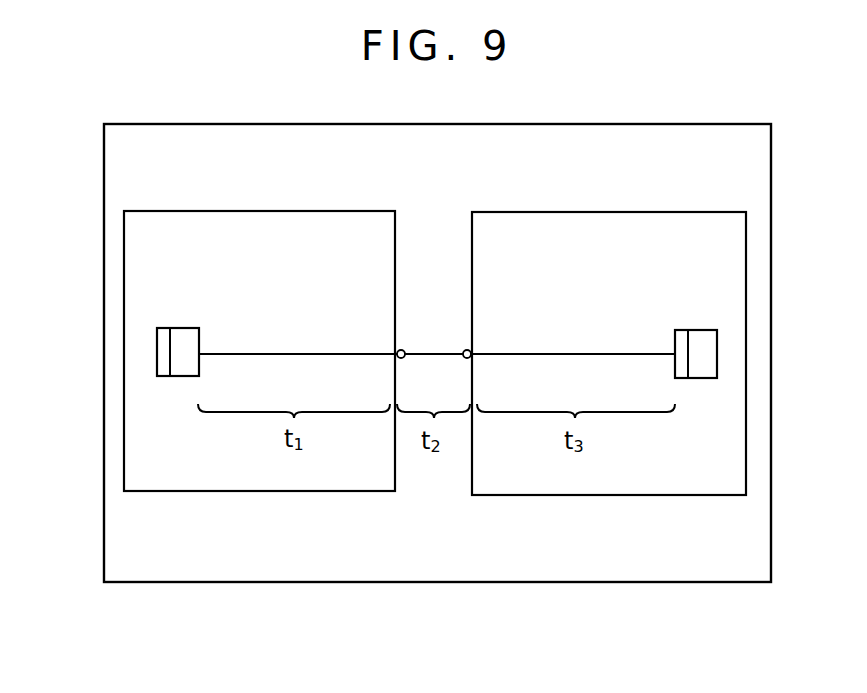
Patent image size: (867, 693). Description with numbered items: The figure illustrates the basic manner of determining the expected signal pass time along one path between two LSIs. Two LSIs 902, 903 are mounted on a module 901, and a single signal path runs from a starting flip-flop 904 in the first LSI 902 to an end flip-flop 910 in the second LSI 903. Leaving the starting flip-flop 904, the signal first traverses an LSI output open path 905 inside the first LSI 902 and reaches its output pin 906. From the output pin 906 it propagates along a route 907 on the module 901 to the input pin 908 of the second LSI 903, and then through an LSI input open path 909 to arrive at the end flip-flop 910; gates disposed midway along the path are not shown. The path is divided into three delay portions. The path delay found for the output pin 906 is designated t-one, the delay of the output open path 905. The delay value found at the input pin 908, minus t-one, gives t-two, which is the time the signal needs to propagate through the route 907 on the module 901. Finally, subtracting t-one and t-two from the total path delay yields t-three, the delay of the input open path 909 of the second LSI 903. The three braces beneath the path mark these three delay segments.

The module 901 is at (670, 583).
The LSI 902 is at (341, 210).
The LSI 903 is at (698, 211).
The starting flip-flop 904 is at (183, 328).
The LSI output open path 905 is at (295, 354).
The output pin 906 is at (403, 347).
The route on the module 907 is at (438, 353).
The input pin 908 is at (467, 358).
The LSI input open path 909 is at (605, 354).
The end flip-flop 910 is at (700, 328).